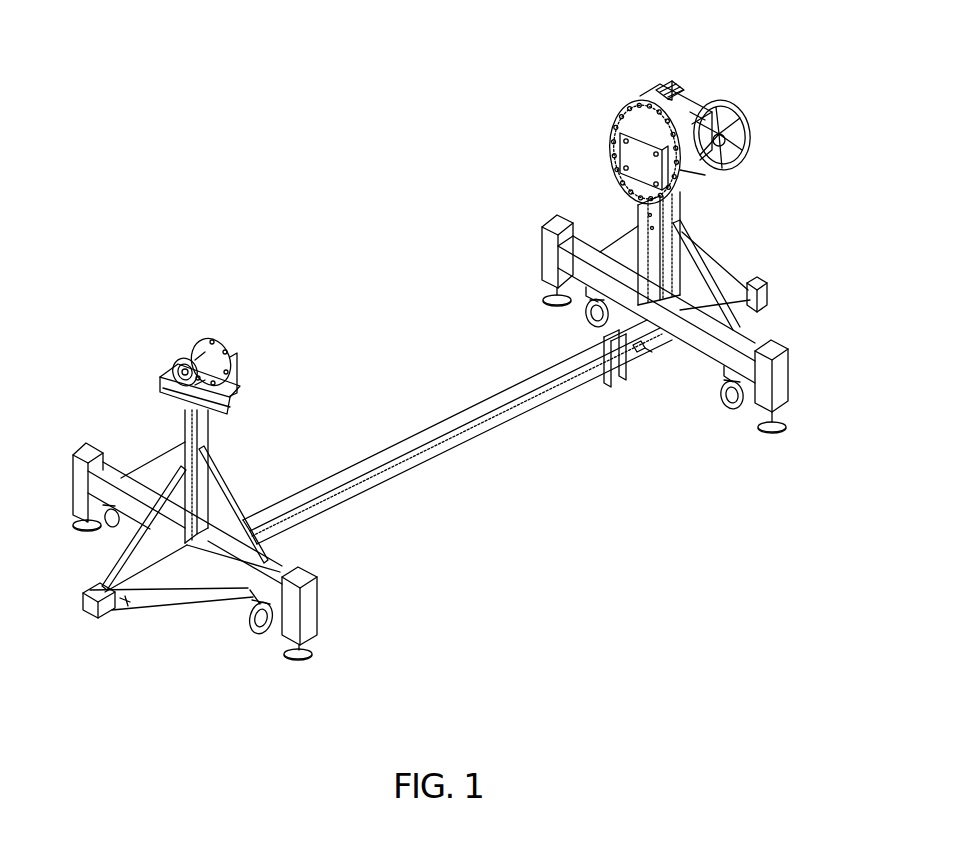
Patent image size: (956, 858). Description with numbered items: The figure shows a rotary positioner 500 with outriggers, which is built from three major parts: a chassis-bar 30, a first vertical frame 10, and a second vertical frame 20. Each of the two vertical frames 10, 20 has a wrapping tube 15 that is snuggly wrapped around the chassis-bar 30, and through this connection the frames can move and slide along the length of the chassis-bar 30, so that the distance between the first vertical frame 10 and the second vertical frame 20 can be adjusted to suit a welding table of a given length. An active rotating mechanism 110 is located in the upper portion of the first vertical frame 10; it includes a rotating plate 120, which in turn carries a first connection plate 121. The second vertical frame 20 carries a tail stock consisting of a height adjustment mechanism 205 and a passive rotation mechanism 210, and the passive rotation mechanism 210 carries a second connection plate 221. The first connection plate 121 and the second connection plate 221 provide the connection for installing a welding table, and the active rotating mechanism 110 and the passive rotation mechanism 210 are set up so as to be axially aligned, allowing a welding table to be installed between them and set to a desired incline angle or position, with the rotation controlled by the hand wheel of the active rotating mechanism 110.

The rotary positioner 500 is at (320, 123).
The first vertical frame 10 is at (682, 218).
The second vertical frame 20 is at (178, 442).
The chassis-bar 30 is at (470, 457).
The wrapping tube 15 is at (667, 357).
The active rotating mechanism 110 is at (702, 77).
The rotating plate 120 is at (623, 105).
The first connection plate 121 is at (620, 140).
The height adjustment mechanism 205 is at (158, 383).
The passive rotation mechanism 210 is at (200, 325).
The second connection plate 221 is at (238, 377).